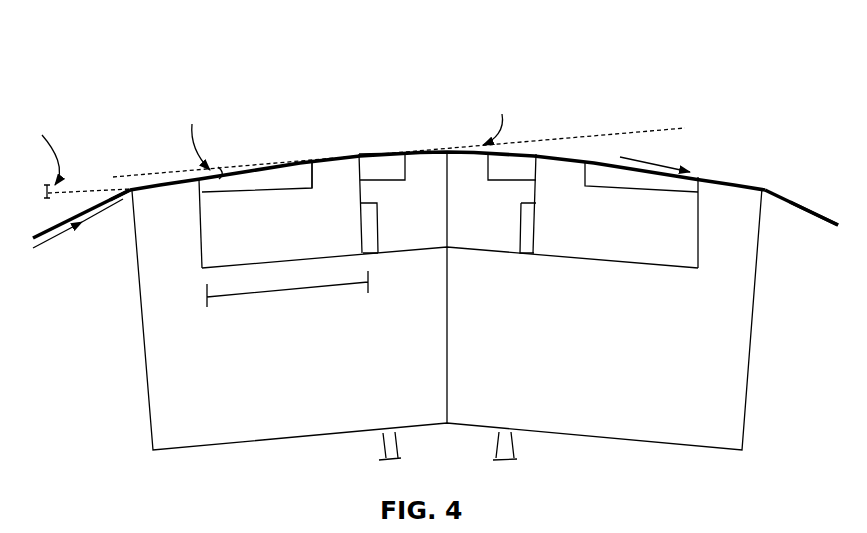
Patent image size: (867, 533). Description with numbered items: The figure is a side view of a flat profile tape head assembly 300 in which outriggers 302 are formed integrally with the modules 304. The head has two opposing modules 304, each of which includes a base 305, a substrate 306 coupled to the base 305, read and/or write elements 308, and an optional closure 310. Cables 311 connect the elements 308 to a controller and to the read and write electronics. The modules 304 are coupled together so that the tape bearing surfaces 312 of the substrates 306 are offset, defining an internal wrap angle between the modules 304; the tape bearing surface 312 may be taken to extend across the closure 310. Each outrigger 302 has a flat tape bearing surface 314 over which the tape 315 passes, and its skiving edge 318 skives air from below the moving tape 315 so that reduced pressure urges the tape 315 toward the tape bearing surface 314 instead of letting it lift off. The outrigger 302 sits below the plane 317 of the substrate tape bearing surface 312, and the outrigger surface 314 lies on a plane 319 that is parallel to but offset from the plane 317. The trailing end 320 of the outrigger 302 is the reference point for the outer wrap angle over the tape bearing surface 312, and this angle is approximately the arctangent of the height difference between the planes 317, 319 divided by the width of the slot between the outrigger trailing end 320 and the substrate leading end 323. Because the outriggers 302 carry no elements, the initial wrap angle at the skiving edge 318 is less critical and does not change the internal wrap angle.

The flat profile tape head assembly 300 is at (240, 128).
The outrigger 302 is at (171, 161).
The module 304 is at (144, 339).
The base 305 is at (187, 387).
The substrate 306 is at (200, 243).
The elements 308 is at (358, 154).
The closure 310 is at (487, 170).
The cables 311 is at (378, 212).
The tape bearing surface of the substrate 312 is at (565, 157).
The tape bearing surface of the outrigger 314 is at (160, 185).
The tape 315 is at (805, 208).
The plane of the substrate tape bearing surface 317 is at (667, 126).
The skiving edge 318 is at (126, 199).
The plane of the outrigger tape bearing surface 319 is at (112, 192).
The trailing end of the outrigger 320 is at (204, 194).
The substrate leading end 323 is at (307, 179).